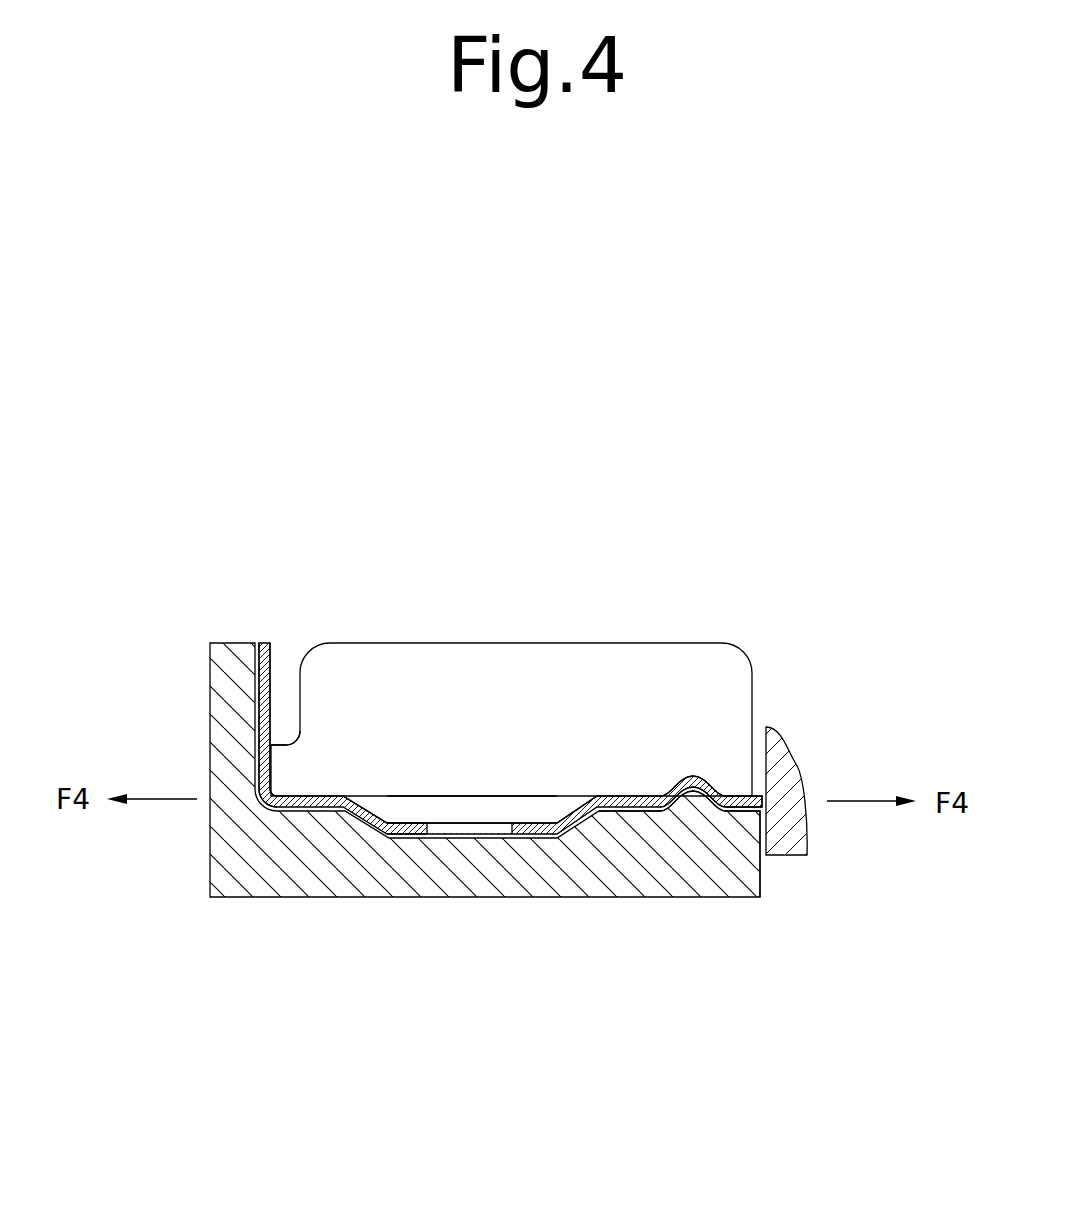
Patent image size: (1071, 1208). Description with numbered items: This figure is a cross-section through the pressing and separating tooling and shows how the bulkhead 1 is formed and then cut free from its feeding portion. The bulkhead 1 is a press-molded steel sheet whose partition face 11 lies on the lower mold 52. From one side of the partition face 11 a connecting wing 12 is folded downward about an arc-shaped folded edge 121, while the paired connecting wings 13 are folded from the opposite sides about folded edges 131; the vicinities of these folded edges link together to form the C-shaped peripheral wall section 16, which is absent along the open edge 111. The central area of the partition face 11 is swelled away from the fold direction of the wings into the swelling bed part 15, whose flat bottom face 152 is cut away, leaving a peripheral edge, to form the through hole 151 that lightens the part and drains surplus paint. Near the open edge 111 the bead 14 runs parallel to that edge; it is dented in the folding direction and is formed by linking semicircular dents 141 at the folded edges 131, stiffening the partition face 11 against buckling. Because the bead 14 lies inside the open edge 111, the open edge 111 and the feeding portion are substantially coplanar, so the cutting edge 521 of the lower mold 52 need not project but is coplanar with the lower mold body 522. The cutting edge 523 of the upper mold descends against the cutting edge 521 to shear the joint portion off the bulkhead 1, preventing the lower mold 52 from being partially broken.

The bulkhead 1 is at (476, 665).
The partition face 11 is at (310, 808).
The open edge 111 is at (769, 797).
The connecting wing 12 is at (265, 702).
The folded edge 121 is at (262, 800).
The connecting wing 13 is at (607, 688).
The folded edge 131 is at (523, 793).
The bead 14 is at (697, 776).
The dent 141 is at (697, 791).
The swelling bed part 15 is at (422, 803).
The through hole 151 is at (470, 830).
The flat bottom face 152 is at (396, 835).
The peripheral wall section 16 is at (283, 760).
The lower mold 52 is at (263, 902).
The cutting edge 521 is at (755, 818).
The lower mold body 522 is at (607, 868).
The cutting edge 523 is at (770, 850).